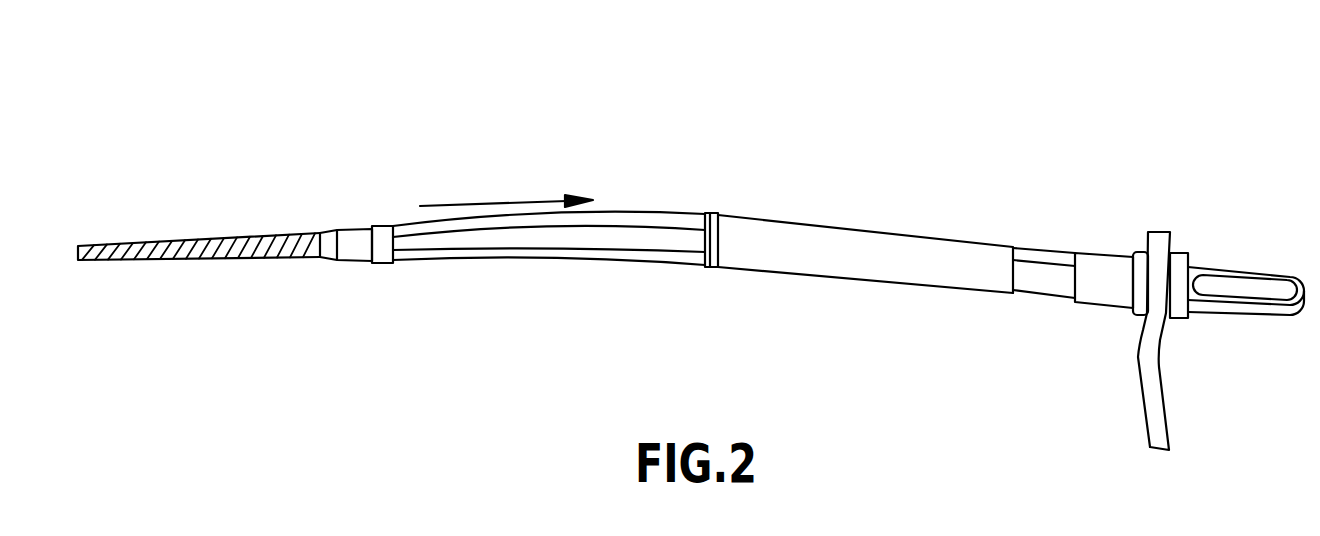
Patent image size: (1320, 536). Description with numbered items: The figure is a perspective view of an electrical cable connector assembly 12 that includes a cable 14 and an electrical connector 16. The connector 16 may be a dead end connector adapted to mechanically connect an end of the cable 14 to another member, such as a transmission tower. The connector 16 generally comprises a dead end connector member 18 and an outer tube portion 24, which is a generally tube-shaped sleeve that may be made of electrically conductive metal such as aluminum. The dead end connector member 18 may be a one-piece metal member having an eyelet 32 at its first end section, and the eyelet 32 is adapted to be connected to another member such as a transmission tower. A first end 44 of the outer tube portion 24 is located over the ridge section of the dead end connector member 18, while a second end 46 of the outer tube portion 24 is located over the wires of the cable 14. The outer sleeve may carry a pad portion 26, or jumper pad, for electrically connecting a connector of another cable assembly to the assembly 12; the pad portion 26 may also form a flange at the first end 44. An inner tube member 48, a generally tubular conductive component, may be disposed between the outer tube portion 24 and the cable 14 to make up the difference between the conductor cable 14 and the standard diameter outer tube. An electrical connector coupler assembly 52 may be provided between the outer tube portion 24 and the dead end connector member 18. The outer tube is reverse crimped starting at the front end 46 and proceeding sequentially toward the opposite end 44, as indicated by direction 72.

The electrical cable connector assembly 12 is at (333, 60).
The cable 14 is at (200, 243).
The electrical connector 16 is at (818, 225).
The dead end connector member 18 is at (1195, 312).
The outer tube portion 24 is at (928, 272).
The pad portion 26 is at (1162, 238).
The eyelet 32 is at (1272, 285).
The first end 44 is at (1043, 248).
The second end 46 is at (407, 228).
The inner tube member 48 is at (345, 238).
The electrical connector coupler assembly 52 is at (1178, 252).
The direction 72 is at (500, 203).